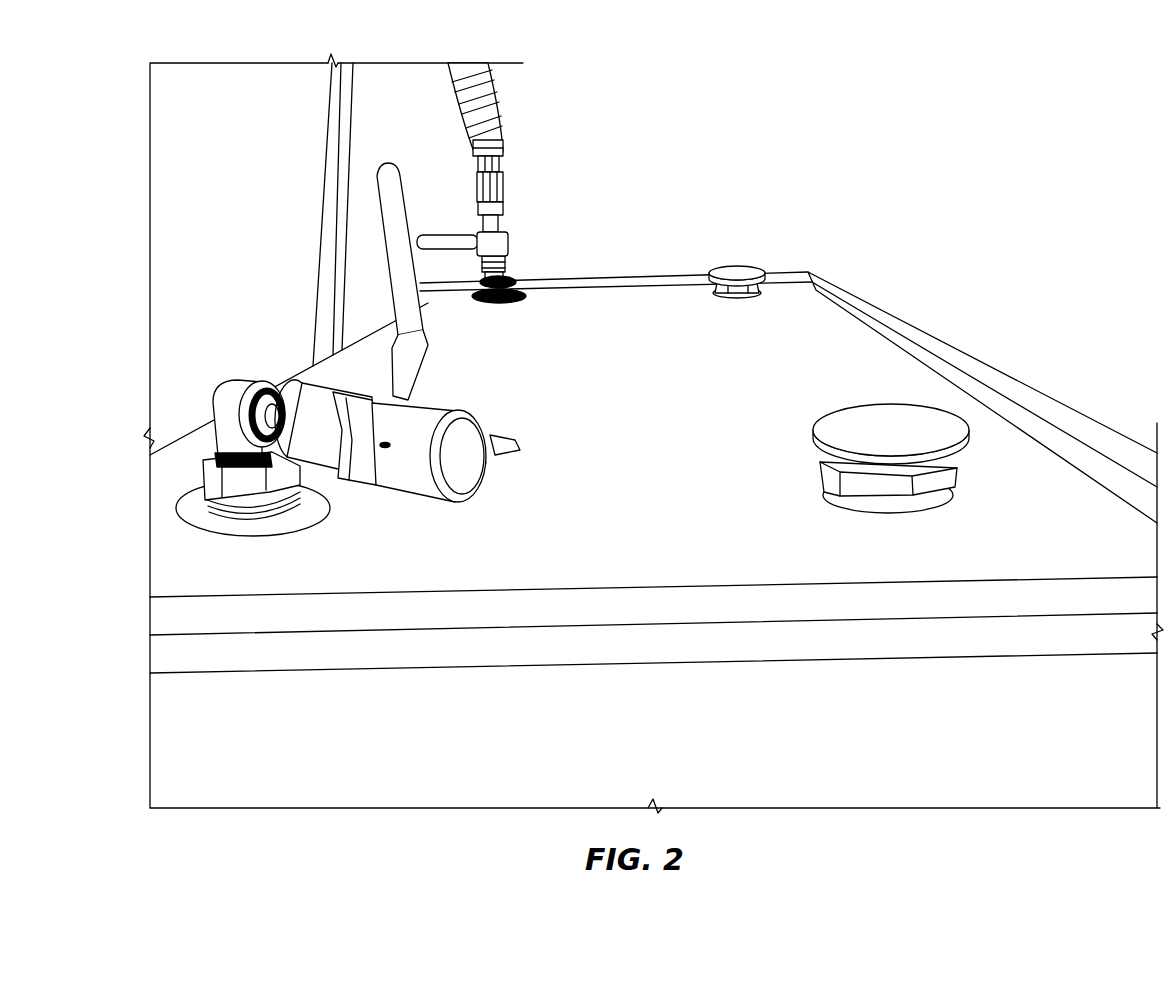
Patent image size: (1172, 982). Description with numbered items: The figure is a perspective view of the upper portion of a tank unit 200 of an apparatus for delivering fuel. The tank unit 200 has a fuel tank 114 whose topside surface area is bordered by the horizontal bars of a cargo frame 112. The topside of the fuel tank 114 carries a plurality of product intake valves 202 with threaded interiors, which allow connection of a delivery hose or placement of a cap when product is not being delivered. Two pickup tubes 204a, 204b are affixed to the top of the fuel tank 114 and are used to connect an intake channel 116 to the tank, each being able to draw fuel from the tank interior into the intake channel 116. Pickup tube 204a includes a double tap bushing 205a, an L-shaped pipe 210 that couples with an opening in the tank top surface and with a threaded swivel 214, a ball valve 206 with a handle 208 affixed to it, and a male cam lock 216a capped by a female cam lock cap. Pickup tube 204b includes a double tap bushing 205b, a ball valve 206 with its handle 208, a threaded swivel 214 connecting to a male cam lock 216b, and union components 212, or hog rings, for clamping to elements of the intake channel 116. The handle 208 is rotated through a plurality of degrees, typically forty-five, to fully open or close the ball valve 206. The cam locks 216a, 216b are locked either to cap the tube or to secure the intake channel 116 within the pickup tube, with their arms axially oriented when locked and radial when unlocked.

The tank unit 200 is at (890, 221).
The cargo frame 112 is at (1018, 607).
The fuel tank 114 is at (641, 427).
The intake channel 116 is at (510, 88).
The product intake valve 202 is at (738, 266).
The pickup tube 204a is at (345, 361).
The pickup tube 204b is at (570, 237).
The double tap bushing 205a is at (313, 505).
The double tap bushing 205b is at (498, 305).
The ball valve 206 is at (325, 396).
The handle 208 is at (387, 176).
The L-shaped pipe 210 is at (225, 410).
The union components 212 is at (506, 150).
The threaded swivel 214 is at (265, 385).
The male cam lock 216a is at (430, 490).
The male cam lock 216b is at (503, 193).